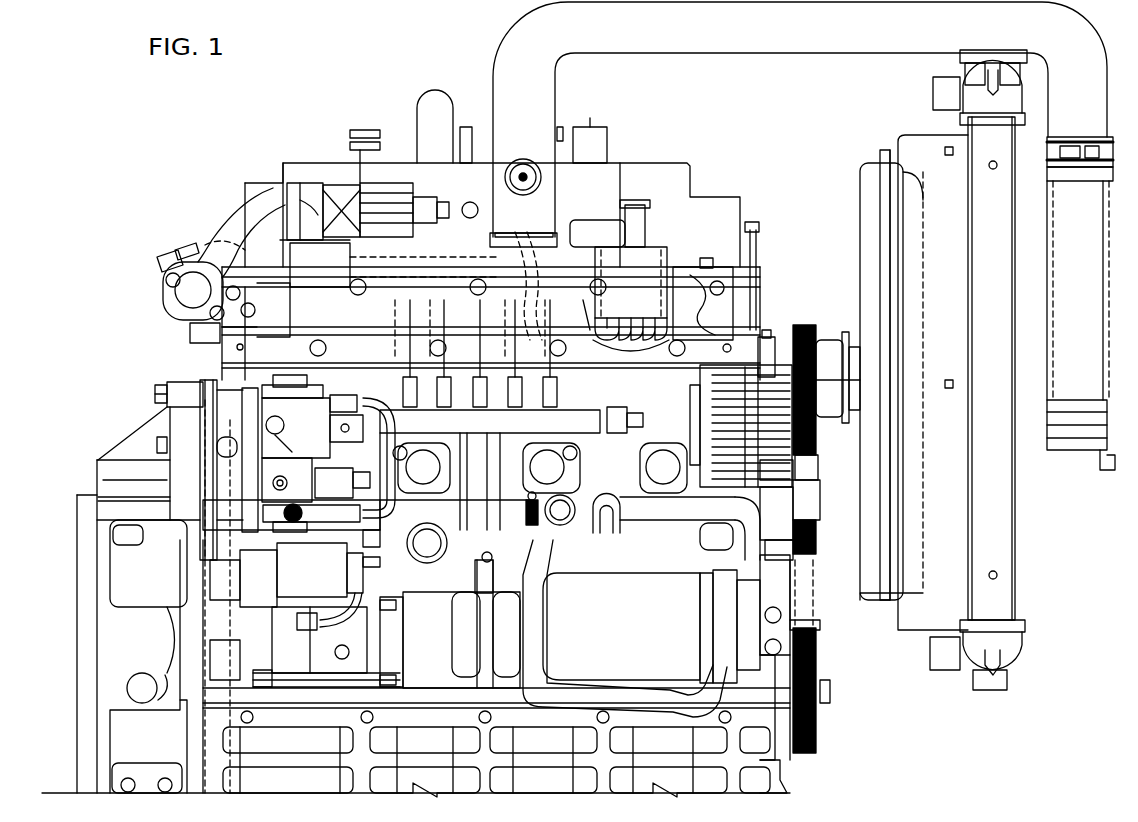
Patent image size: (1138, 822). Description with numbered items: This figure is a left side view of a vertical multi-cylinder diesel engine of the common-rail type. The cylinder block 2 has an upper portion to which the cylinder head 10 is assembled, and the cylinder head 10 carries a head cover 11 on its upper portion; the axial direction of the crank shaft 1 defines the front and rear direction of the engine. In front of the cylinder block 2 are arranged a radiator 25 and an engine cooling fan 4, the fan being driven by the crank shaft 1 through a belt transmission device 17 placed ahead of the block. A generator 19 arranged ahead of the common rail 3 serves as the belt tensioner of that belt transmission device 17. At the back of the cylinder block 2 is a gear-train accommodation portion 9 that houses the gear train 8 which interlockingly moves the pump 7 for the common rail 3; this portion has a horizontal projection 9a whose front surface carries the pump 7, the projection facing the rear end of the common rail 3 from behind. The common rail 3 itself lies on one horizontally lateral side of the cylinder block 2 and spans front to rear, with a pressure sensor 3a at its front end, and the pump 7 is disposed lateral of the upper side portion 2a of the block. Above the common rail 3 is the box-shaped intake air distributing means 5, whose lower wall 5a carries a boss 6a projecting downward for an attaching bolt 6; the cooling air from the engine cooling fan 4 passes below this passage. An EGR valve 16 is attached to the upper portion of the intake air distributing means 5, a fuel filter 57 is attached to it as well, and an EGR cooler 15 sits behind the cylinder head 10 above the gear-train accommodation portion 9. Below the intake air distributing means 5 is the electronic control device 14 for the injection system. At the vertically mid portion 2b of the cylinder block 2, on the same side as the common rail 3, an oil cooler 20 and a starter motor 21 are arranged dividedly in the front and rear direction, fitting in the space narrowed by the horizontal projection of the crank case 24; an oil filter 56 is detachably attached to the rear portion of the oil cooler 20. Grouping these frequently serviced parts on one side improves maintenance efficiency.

The crank shaft 1 is at (832, 688).
The cylinder block 2 is at (787, 765).
The upper side portion of the cylinder block 2a is at (812, 448).
The vertically mid portion of the cylinder block 2b is at (720, 566).
The common rail 3 is at (577, 392).
The pressure sensor 3a is at (644, 509).
The engine cooling fan 4 is at (881, 185).
The intake air distributing means 5 is at (750, 292).
The lower wall 5a is at (535, 280).
The attaching bolt 6 is at (523, 293).
The boss 6a is at (574, 314).
The pump 7 is at (243, 397).
The gear train 8 is at (220, 470).
The gear-train accommodation portion 9 is at (175, 382).
The horizontal projection 9a is at (142, 388).
The cylinder head 10 is at (235, 340).
The head cover 11 is at (652, 205).
The electronic control device 14 is at (493, 505).
The EGR cooler 15 is at (187, 258).
The EGR valve 16 is at (362, 185).
The belt transmission device 17 is at (873, 372).
The generator 19 is at (778, 380).
The oil cooler 20 is at (815, 627).
The starter motor 21 is at (403, 617).
The crank case 24 is at (815, 725).
The radiator 25 is at (927, 152).
The oil filter 56 is at (660, 620).
The fuel filter 57 is at (648, 275).